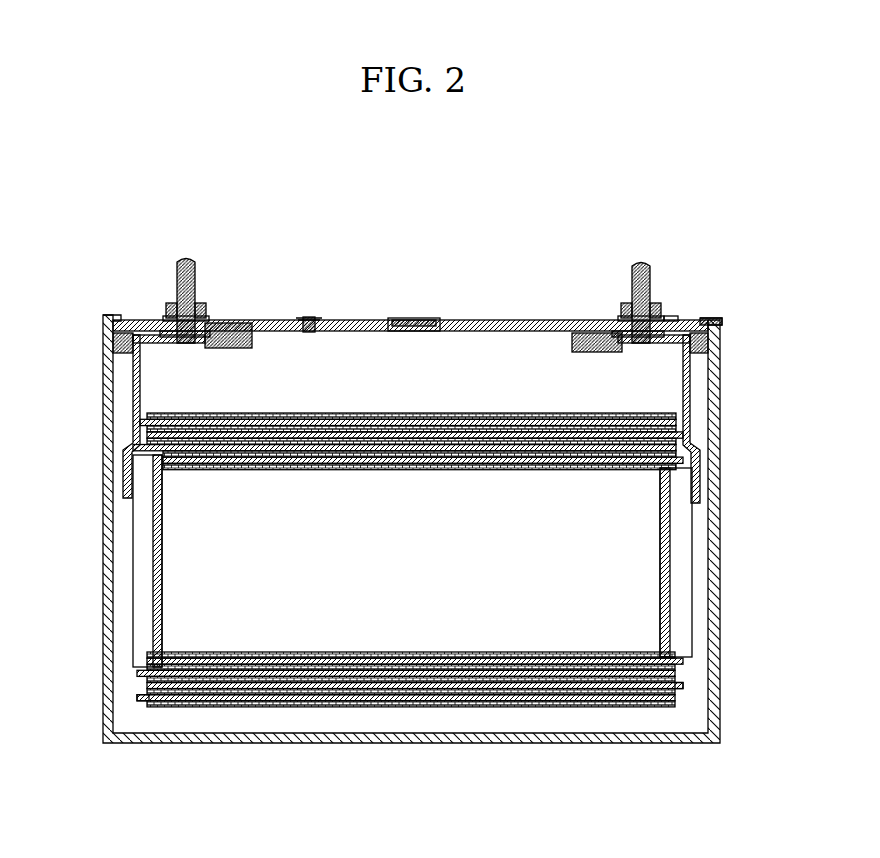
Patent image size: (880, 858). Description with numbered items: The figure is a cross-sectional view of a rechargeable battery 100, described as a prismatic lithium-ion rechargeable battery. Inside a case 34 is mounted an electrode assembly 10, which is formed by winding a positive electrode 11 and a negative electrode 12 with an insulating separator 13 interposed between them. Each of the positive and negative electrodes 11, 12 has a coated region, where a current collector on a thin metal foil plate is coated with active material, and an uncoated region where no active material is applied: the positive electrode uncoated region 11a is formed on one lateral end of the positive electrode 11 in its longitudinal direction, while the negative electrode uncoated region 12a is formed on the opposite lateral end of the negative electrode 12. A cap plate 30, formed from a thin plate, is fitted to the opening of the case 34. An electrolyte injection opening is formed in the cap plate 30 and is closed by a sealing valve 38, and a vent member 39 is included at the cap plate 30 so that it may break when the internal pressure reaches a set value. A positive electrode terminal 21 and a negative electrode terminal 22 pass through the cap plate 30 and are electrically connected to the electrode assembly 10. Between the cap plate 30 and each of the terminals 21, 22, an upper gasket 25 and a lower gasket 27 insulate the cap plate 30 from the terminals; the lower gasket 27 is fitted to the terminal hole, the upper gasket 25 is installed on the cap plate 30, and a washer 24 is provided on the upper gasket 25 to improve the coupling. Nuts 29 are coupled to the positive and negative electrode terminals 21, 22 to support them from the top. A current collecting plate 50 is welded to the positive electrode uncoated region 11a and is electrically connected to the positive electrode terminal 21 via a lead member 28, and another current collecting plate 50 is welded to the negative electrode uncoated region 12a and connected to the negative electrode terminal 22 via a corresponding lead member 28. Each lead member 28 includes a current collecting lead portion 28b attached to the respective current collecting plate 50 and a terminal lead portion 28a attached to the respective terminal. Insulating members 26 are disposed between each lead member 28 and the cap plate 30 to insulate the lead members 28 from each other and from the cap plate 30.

The rechargeable battery 100 is at (397, 202).
The electrode assembly 10 is at (412, 607).
The positive electrode 11 is at (247, 703).
The positive electrode uncoated region 11a is at (138, 700).
The negative electrode 12 is at (290, 688).
The negative electrode uncoated region 12a is at (680, 688).
The insulating separator 13 is at (412, 678).
The positive electrode terminal 21 is at (195, 268).
The negative electrode terminal 22 is at (632, 270).
The washer 24 is at (627, 318).
The upper gasket 25 is at (687, 320).
The insulating member 26 is at (712, 337).
The lower gasket 27 is at (578, 352).
The lead member 28 is at (127, 343).
The terminal lead portion 28a is at (192, 343).
The current collecting lead portion 28b is at (132, 405).
The nut 29 is at (170, 303).
The cap plate 30 is at (475, 318).
The case 34 is at (715, 500).
The sealing valve 38 is at (307, 318).
The vent member 39 is at (420, 318).
The current collecting plate 50 is at (132, 560).